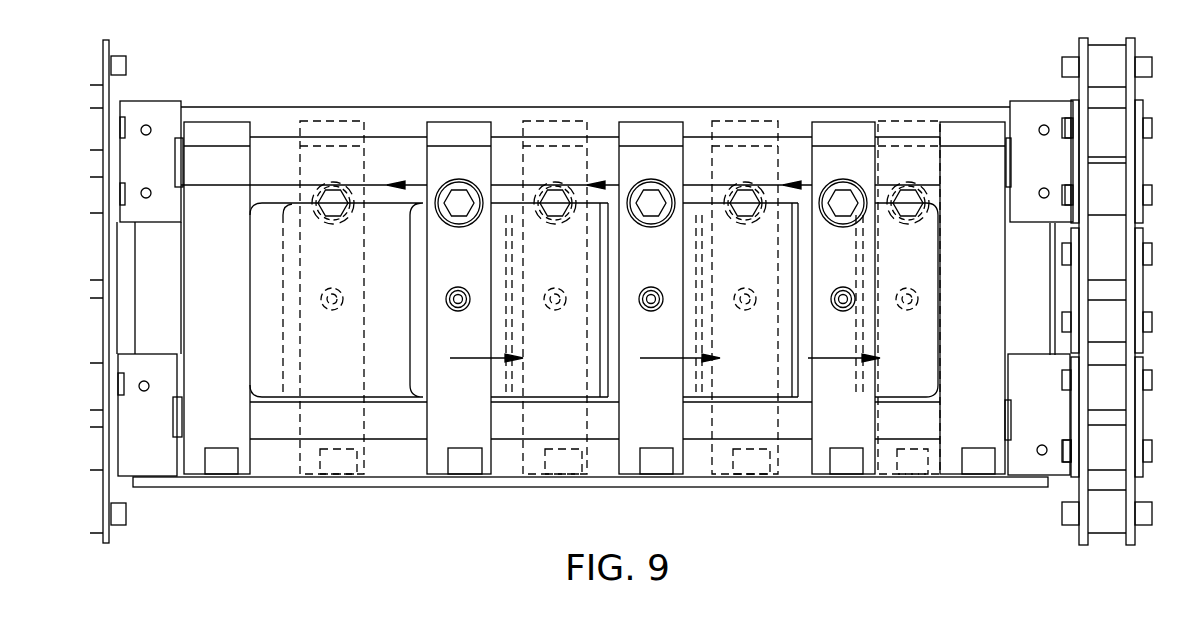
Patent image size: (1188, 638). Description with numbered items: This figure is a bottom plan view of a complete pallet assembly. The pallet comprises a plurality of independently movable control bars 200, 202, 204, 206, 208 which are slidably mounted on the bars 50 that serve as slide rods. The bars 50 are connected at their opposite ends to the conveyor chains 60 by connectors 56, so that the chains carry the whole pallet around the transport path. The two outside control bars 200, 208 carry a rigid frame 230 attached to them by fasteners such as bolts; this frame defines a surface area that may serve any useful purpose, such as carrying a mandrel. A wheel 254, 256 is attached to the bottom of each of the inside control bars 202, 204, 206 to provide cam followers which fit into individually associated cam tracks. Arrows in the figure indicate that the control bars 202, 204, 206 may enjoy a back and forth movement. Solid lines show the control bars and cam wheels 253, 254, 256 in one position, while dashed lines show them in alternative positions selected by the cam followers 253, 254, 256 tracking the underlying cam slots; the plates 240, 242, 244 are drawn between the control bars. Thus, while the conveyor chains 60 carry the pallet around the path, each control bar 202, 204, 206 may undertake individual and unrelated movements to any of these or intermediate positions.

The bar 50 is at (272, 153).
The connector 56 is at (153, 108).
The conveyor chain 60 is at (126, 65).
The control bar 200 is at (194, 292).
The control bar 202 is at (480, 272).
The control bar 204 is at (672, 347).
The control bar 206 is at (865, 436).
The control bar 208 is at (988, 327).
The rigid frame 230 is at (400, 118).
The plate 240 is at (407, 400).
The plate 242 is at (607, 400).
The plate 244 is at (797, 400).
The cam wheel 253 is at (467, 190).
The wheel 254 is at (655, 185).
The wheel 256 is at (845, 180).